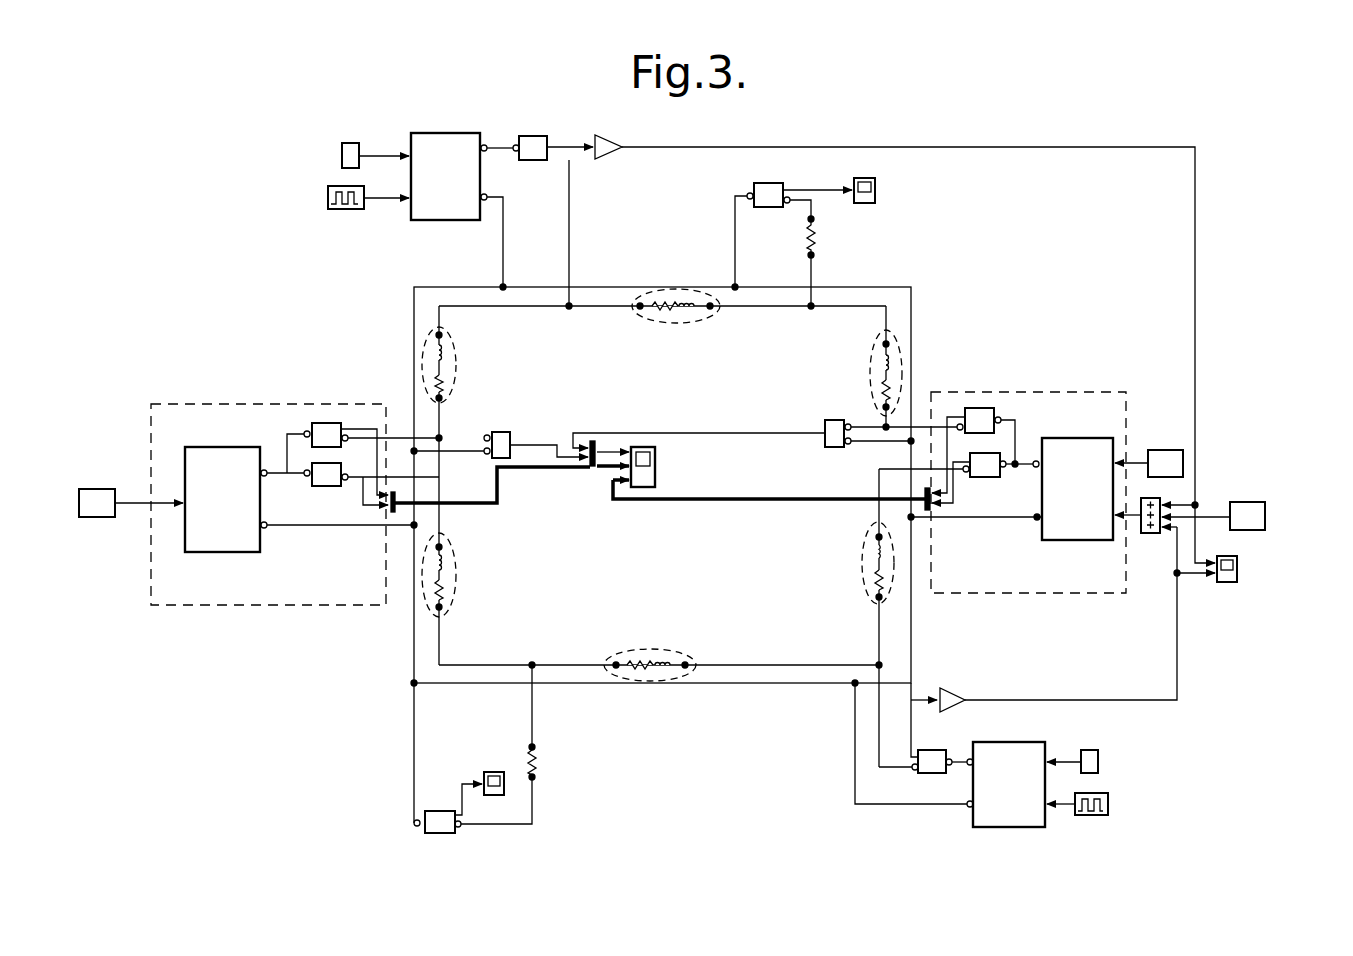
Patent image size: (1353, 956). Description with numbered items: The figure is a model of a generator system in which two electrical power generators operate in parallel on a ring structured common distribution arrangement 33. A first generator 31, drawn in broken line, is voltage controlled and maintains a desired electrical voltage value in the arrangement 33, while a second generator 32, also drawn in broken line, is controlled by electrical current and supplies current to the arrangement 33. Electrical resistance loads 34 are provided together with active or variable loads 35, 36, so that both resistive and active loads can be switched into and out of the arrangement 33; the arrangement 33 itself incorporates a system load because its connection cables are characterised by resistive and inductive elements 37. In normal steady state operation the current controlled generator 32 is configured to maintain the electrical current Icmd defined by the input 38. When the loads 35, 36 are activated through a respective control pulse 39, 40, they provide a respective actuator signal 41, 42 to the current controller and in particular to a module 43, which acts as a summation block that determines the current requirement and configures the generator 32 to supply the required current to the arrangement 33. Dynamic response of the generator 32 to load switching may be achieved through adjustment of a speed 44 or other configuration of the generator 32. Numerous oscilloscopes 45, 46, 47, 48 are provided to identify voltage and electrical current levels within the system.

The first generator 31 is at (213, 404).
The second generator 32 is at (1100, 392).
The common distribution arrangement 33 is at (912, 287).
The electrical resistance loads 34 is at (815, 238).
The active or variable load 35 is at (431, 138).
The active or variable load 36 is at (997, 817).
The resistive and inductive elements 37 is at (672, 306).
The electrical current load input 38 is at (1265, 517).
The control pulse 39 is at (328, 198).
The control pulse 40 is at (1108, 803).
The actuator signal 41 is at (1102, 147).
The actuator signal 42 is at (1177, 660).
The module 43 is at (90, 517).
The speed 44 is at (1170, 450).
The oscilloscope 45 is at (484, 775).
The oscilloscope 46 is at (876, 190).
The oscilloscope 47 is at (1237, 572).
The oscilloscope 48 is at (640, 487).